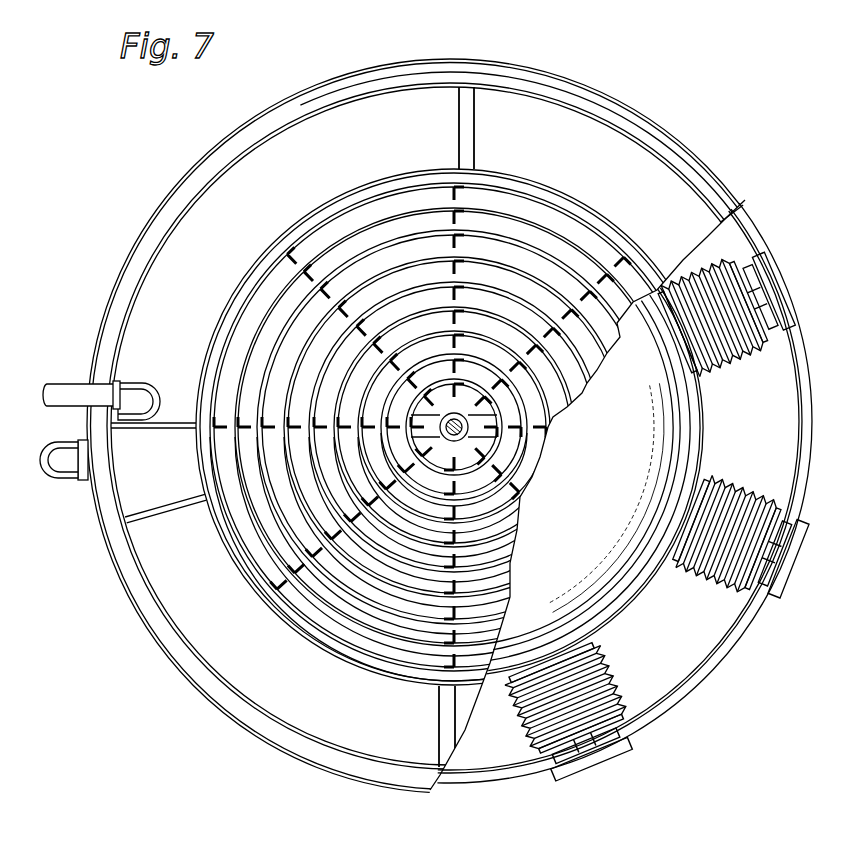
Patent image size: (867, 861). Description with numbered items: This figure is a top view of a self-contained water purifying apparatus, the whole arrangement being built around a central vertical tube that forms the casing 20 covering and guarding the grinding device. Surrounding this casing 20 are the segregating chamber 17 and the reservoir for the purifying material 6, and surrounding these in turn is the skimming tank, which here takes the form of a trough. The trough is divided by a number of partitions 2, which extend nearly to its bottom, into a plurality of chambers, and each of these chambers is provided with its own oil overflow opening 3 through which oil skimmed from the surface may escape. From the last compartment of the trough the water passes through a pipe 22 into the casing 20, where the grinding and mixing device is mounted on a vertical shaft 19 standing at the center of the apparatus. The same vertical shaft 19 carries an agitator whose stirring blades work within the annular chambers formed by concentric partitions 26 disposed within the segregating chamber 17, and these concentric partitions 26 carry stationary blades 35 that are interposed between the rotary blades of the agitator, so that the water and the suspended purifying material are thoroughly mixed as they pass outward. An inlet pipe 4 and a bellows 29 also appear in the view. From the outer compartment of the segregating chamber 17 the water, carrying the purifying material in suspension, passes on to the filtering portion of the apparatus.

The partitions 2 is at (487, 740).
The oil overflow opening 3 is at (440, 80).
The inlet pipe 4 is at (63, 385).
The reservoir for the purifying material 6 is at (595, 481).
The segregating chamber 17 is at (542, 222).
The vertical shaft 19 is at (454, 440).
The casing 20 is at (458, 416).
The pipe 22 is at (56, 478).
The concentric partitions 26 is at (454, 427).
The bellows 29 is at (762, 347).
The stationary blades 35 is at (352, 273).